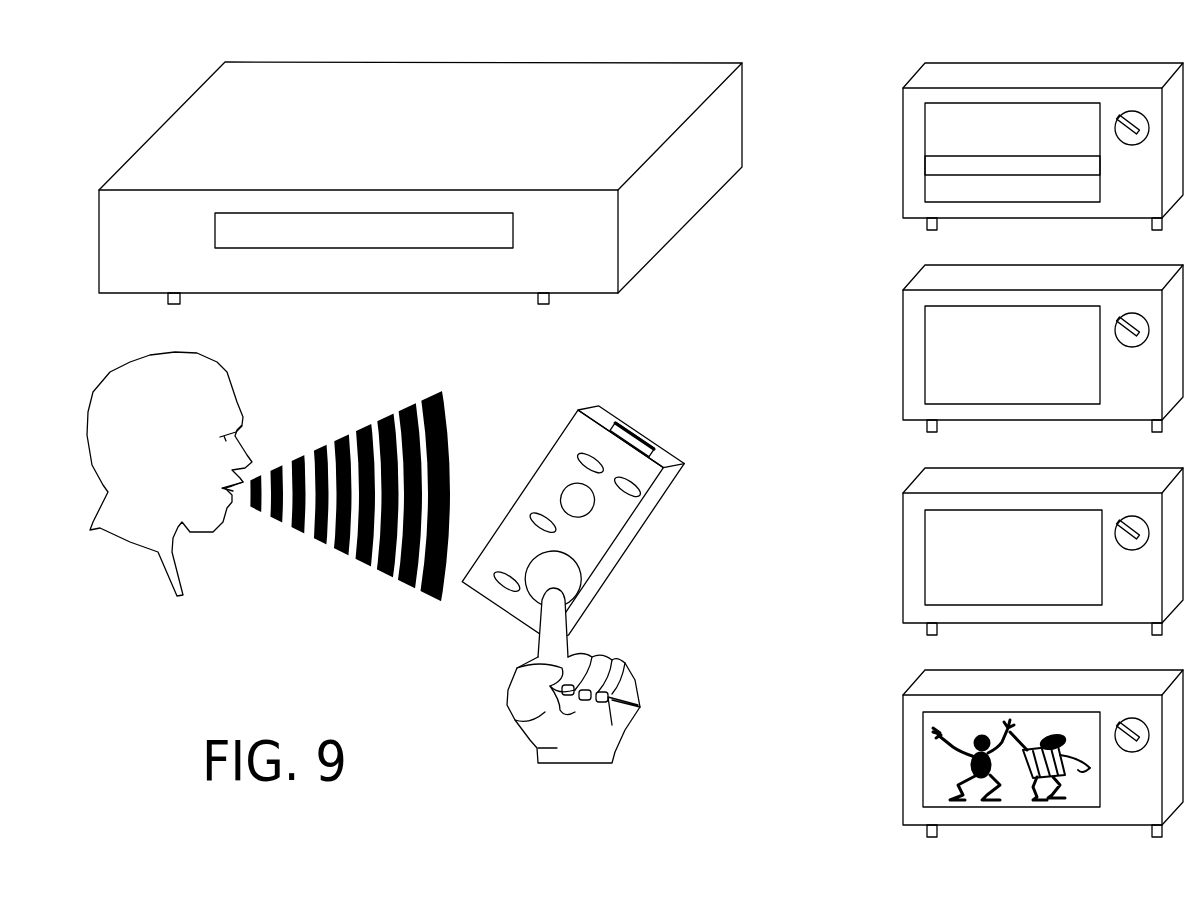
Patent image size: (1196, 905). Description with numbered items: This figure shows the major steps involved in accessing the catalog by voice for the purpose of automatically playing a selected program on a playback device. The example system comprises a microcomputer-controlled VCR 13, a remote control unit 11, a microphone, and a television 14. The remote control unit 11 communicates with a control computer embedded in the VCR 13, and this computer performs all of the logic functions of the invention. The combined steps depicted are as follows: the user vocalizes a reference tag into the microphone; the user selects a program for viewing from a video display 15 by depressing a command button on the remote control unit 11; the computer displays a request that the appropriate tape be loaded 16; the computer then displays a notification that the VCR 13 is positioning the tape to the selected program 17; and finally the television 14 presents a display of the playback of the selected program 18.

The remote control unit 11 is at (573, 505).
The VCR 13 is at (492, 62).
The television 14 is at (903, 123).
The video display 15 is at (925, 193).
The request that the appropriate tape be loaded 16 is at (933, 393).
The notification that the VCR is positioning the tape 17 is at (933, 588).
The display of the playback of the selected program 18 is at (937, 767).